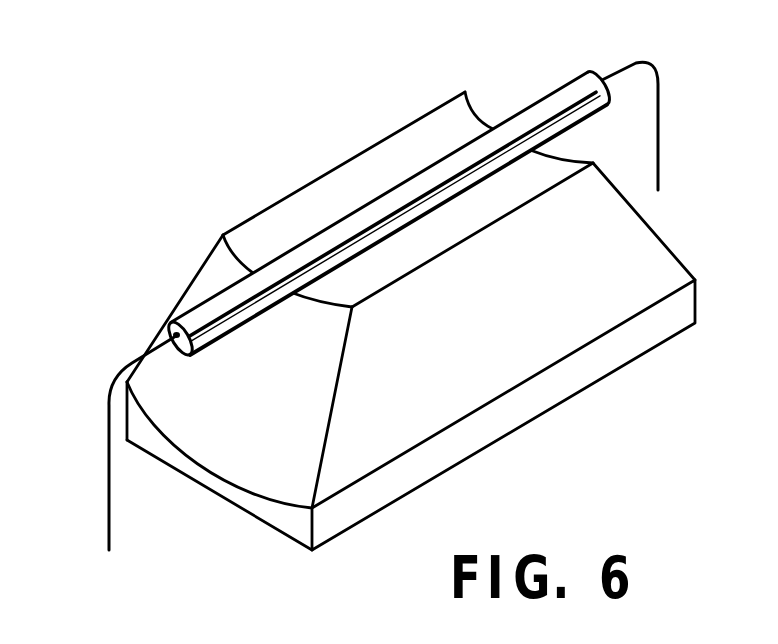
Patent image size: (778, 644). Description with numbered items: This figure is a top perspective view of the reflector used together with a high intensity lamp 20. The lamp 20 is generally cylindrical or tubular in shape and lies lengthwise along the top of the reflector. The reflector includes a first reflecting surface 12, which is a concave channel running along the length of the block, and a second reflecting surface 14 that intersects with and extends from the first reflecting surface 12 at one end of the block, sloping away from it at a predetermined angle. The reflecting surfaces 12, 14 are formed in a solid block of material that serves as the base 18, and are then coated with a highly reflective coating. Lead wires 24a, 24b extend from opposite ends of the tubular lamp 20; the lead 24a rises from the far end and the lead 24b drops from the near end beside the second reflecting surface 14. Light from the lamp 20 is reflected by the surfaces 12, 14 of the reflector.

The first reflecting surface 12 is at (411, 300).
The second reflecting surface 14 is at (268, 416).
The base 18 is at (590, 367).
The high intensity lamp 20 is at (542, 110).
The lead wire 24a is at (658, 146).
The lead wire 24b is at (109, 488).